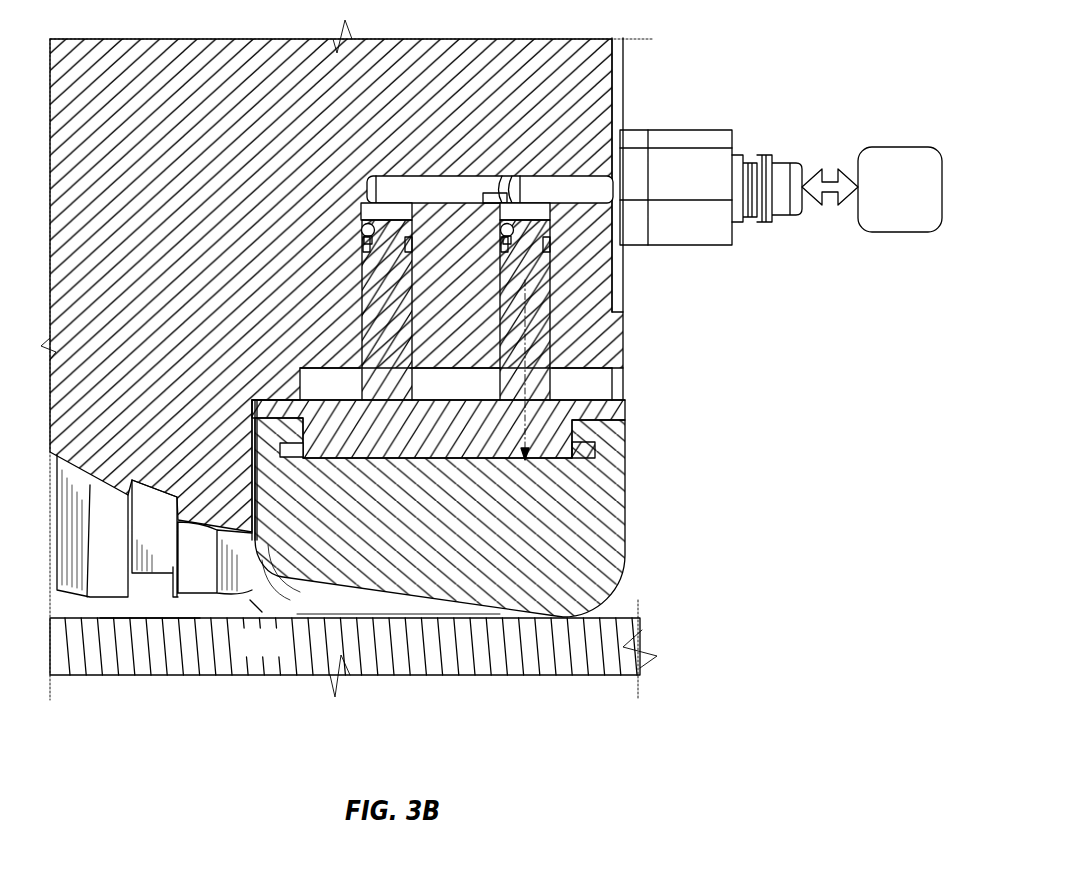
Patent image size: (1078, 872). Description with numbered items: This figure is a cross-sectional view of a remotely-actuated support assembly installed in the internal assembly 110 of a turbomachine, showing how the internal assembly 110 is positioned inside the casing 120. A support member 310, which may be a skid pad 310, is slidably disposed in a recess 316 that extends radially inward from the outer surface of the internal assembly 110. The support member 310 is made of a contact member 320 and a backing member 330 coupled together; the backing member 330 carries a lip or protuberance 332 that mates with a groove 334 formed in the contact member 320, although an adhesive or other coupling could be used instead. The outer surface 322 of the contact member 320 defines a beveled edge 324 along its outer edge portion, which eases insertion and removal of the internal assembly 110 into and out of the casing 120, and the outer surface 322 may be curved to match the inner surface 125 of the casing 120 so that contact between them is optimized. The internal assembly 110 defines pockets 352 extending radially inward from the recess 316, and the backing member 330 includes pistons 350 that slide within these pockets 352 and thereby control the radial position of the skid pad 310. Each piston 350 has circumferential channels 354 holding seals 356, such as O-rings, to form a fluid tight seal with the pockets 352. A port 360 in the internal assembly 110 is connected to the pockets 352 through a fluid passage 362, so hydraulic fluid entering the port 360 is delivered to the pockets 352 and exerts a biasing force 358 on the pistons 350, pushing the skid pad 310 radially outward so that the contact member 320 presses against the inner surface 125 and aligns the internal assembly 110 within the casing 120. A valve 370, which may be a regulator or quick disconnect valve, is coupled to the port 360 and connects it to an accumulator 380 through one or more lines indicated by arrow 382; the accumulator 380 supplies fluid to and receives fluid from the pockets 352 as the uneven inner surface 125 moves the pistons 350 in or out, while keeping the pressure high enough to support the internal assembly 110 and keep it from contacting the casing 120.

The internal assembly 110 is at (203, 147).
The casing 120 is at (276, 656).
The inner surface of the casing 125 is at (146, 612).
The support member 310 is at (705, 377).
The recess 316 is at (256, 465).
The contact member 320 is at (607, 533).
The outer surface of the contact member 322 is at (387, 607).
The beveled edge 324 is at (243, 607).
The backing member 330 is at (618, 413).
The protuberance 332 is at (607, 453).
The groove 334 is at (288, 452).
The pistons 350 is at (365, 282).
The pockets 352 is at (365, 318).
The circumferential channels 354 is at (365, 228).
The seals 356 is at (365, 243).
The biasing force 358 is at (523, 437).
The ports 360 is at (603, 210).
The fluid passages 362 is at (452, 176).
The valve 370 is at (688, 130).
The accumulator 380 is at (900, 189).
The arrow indicating lines 382 is at (830, 180).